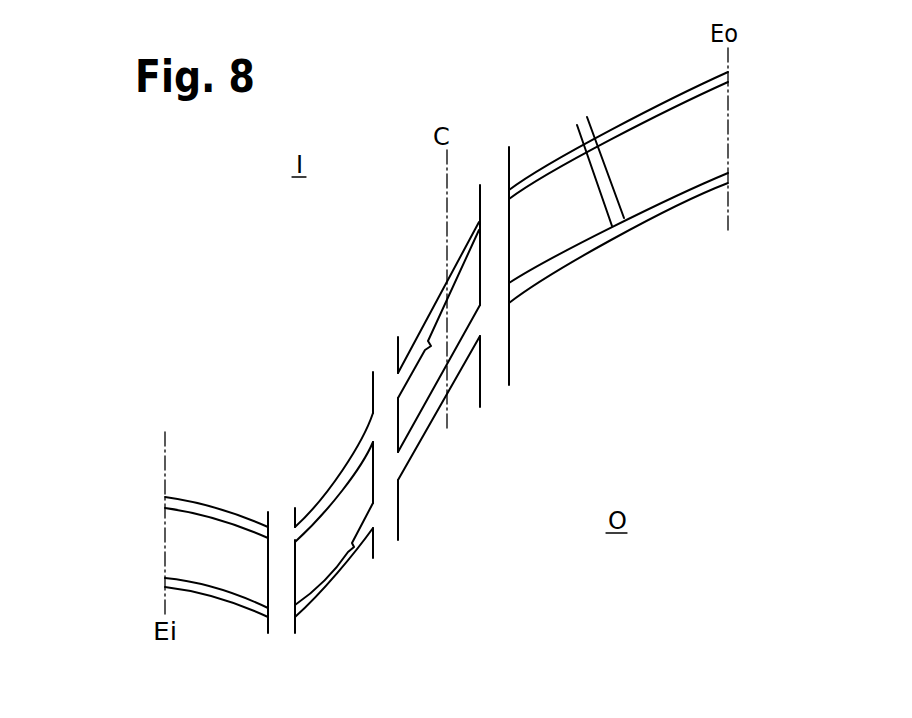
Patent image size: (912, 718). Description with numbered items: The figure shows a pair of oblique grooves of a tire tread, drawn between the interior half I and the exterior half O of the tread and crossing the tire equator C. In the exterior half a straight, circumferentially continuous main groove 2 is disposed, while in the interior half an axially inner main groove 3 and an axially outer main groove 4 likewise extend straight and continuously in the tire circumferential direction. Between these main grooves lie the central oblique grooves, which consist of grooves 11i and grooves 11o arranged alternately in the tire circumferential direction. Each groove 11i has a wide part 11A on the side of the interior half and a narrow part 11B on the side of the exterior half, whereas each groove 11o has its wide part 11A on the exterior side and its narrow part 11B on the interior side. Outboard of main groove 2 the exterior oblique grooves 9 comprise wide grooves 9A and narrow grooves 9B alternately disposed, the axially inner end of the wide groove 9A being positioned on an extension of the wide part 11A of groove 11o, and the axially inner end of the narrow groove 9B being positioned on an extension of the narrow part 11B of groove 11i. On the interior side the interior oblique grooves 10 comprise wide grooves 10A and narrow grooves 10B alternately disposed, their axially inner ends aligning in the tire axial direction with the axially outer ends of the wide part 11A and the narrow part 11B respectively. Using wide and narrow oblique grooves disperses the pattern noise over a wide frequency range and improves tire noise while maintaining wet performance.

The main groove 2 is at (495, 399).
The axially inner main groove 3 is at (384, 541).
The axially outer main groove 4 is at (274, 515).
The exterior oblique grooves 9 is at (670, 187).
The wide exterior oblique groove 9A is at (683, 196).
The narrow exterior oblique groove 9B is at (662, 95).
The interior oblique grooves 10 is at (149, 540).
The wide interior oblique groove 10A is at (214, 507).
The narrow interior oblique groove 10B is at (208, 588).
The wide part 11A is at (342, 473).
The narrow part 11B is at (432, 315).
The central oblique groove 11i is at (403, 279).
The central oblique groove 11o is at (452, 643).